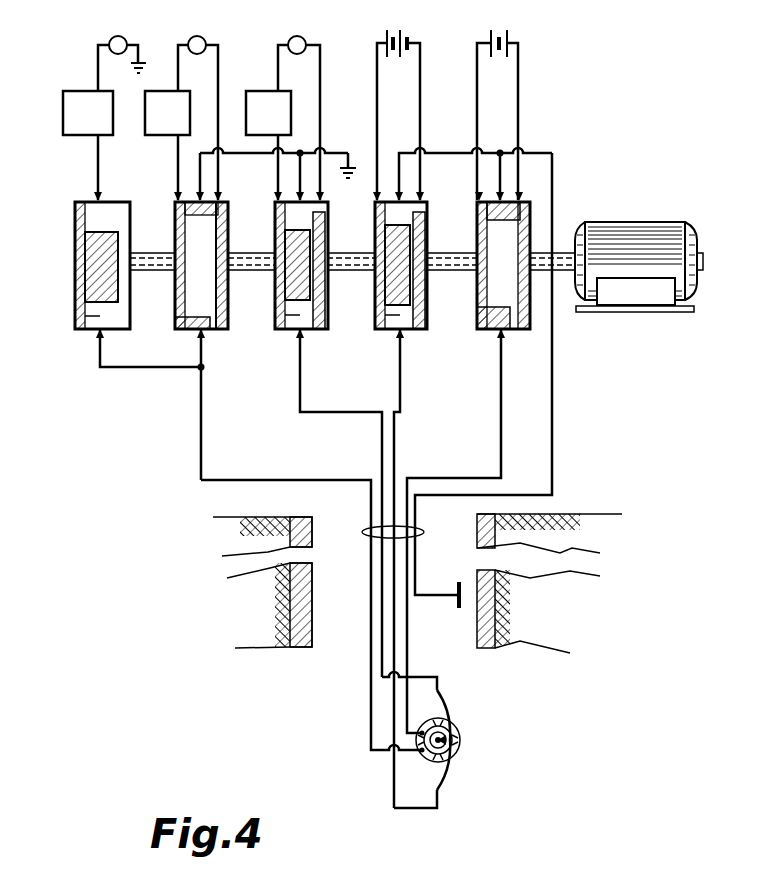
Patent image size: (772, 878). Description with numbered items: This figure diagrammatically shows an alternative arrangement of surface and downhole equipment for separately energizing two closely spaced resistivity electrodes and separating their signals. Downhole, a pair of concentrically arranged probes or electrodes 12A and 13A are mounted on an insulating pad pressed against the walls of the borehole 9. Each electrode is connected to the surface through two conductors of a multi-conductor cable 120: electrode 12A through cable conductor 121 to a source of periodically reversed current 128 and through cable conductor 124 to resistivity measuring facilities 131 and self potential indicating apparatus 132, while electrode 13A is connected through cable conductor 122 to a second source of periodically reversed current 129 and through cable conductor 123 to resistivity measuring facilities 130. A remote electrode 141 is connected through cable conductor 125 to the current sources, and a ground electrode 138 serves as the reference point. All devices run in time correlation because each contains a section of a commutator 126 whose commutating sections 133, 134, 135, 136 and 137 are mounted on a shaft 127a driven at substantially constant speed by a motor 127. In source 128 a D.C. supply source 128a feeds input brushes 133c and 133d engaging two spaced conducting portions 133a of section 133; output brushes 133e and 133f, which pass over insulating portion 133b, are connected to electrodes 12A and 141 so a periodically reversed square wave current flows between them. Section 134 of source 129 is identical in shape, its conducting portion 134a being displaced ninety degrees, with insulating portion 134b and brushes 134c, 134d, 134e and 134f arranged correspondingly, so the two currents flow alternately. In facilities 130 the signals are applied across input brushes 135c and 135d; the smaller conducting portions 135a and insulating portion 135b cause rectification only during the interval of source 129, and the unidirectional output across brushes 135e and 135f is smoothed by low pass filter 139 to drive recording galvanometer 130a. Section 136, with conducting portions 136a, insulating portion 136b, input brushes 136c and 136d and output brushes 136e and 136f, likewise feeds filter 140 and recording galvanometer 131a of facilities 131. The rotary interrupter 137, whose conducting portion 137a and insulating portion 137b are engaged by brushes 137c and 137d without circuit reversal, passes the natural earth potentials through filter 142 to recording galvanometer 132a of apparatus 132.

The nozzle bore wall 9 is at (322, 535).
The electrode 12A is at (460, 741).
The electrode 13A is at (446, 728).
The multi-conductor cable 120 is at (364, 537).
The cable conductor 121 is at (500, 407).
The cable conductor 122 is at (393, 395).
The cable conductor 123 is at (299, 399).
The cable conductor 124 is at (200, 407).
The cable conductor 125 is at (553, 368).
The commutator 126 is at (576, 158).
The motor 127 is at (665, 224).
The shaft 127a is at (566, 253).
The source of periodically reversed current 128 is at (467, 32).
The D.C. supply source 128a is at (509, 35).
The source of periodically reversed current 129 is at (369, 30).
The resistivity measuring facilities 130 is at (263, 50).
The recording galvanometer 130a is at (303, 40).
The resistivity measuring facilities 131 is at (167, 47).
The recording galvanometer 131a is at (200, 36).
The self potential indicating apparatus 132 is at (46, 78).
The recording galvanometer 132a is at (118, 36).
The commutating section 133 is at (497, 340).
The conducting portions 133a is at (487, 258).
The insulating portion 133b is at (496, 308).
The input brush 133c is at (478, 197).
The input brush 133d is at (522, 196).
The output brush 133e is at (503, 336).
The output brush 133f is at (520, 195).
The commutating section 134 is at (426, 318).
The conducting portion 134a is at (416, 224).
The switch cell contact 134b is at (396, 316).
The switch cell contact 134c is at (383, 208).
The switch cell contact 134d is at (424, 196).
The switch cell output contact 134e is at (398, 337).
The switch cell contact 134f is at (396, 196).
The commutating section 135 is at (326, 318).
The conducting portions 135a is at (318, 218).
The insulating portion 135b is at (296, 315).
The input brush 135c is at (297, 337).
The input brush 135d is at (297, 196).
The output brush 135e is at (282, 206).
The output brush 135f is at (323, 196).
The commutating section 136 is at (226, 318).
The conducting portions 136a is at (216, 250).
The switch cell bottom wall 136b is at (188, 306).
The input brush 136c is at (199, 335).
The input brush 136d is at (203, 196).
The output brush 136e is at (178, 199).
The output brush 136f is at (220, 197).
The commutating section 137 is at (75, 262).
The conducting portion 137a is at (85, 240).
The insulating portion 137b is at (100, 316).
The brush 137c is at (97, 334).
The brush 137d is at (100, 197).
The ground electrode 138 is at (349, 165).
The low pass filter 139 is at (141, 63).
The filter 140 is at (145, 98).
The remote electrode 141 is at (456, 588).
The filter 142 is at (63, 101).